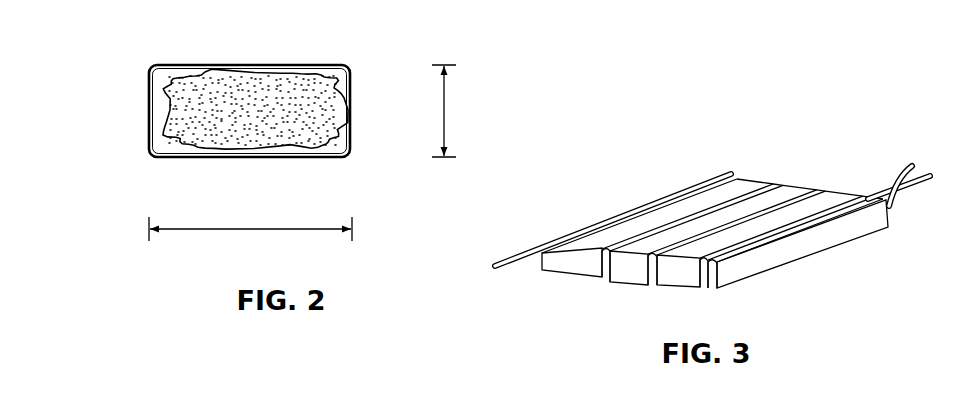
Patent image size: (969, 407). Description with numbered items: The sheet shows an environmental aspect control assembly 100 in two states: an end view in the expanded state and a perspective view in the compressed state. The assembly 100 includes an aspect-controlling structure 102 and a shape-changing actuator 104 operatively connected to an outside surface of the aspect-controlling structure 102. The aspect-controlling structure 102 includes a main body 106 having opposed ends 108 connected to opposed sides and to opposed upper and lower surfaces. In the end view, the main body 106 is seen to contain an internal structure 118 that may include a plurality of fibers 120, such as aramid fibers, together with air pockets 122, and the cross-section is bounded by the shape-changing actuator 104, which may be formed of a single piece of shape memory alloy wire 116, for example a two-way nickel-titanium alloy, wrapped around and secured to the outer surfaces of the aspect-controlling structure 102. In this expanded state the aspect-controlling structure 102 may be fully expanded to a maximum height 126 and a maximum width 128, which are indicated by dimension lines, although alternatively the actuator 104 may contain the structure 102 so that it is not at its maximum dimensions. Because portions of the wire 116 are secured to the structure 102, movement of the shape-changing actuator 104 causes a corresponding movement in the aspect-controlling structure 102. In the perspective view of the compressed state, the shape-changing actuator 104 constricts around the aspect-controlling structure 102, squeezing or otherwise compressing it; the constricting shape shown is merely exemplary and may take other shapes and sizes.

In FIG. 2, the environmental aspect control assembly 100 is at (108, 52).
In FIG. 3, the environmental aspect control assembly 100 is at (586, 193).
In FIG. 2, the aspect-controlling structure 102 is at (313, 115).
In FIG. 3, the aspect-controlling structure 102 is at (855, 192).
In FIG. 2, the shape-changing actuator 104 is at (297, 60).
In FIG. 3, the shape-changing actuator 104 is at (779, 175).
In FIG. 2, the main body 106 is at (175, 117).
In FIG. 2, the opposed ends 108 is at (190, 125).
In FIG. 2, the shape memory alloy wire 116 is at (325, 65).
In FIG. 3, the shape memory alloy wire 116 is at (830, 187).
In FIG. 2, the internal structure 118 is at (210, 103).
In FIG. 2, the fibers 120 is at (243, 78).
In FIG. 2, the air pockets 122 is at (236, 120).
In FIG. 2, the maximum height 126 is at (445, 110).
In FIG. 2, the maximum width 128 is at (248, 230).